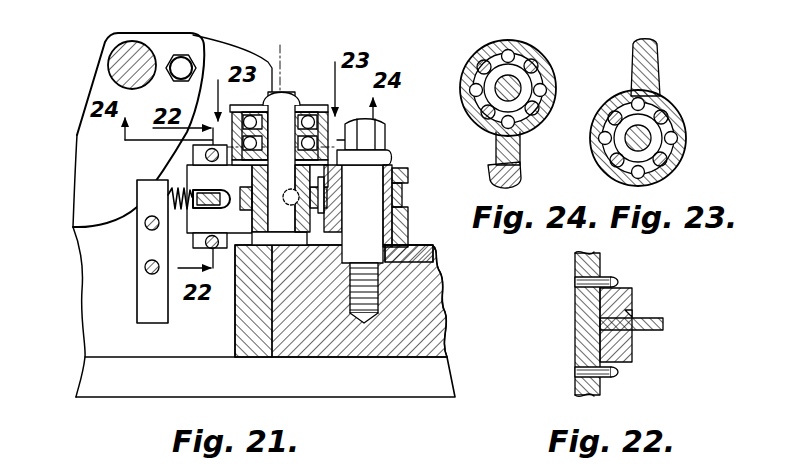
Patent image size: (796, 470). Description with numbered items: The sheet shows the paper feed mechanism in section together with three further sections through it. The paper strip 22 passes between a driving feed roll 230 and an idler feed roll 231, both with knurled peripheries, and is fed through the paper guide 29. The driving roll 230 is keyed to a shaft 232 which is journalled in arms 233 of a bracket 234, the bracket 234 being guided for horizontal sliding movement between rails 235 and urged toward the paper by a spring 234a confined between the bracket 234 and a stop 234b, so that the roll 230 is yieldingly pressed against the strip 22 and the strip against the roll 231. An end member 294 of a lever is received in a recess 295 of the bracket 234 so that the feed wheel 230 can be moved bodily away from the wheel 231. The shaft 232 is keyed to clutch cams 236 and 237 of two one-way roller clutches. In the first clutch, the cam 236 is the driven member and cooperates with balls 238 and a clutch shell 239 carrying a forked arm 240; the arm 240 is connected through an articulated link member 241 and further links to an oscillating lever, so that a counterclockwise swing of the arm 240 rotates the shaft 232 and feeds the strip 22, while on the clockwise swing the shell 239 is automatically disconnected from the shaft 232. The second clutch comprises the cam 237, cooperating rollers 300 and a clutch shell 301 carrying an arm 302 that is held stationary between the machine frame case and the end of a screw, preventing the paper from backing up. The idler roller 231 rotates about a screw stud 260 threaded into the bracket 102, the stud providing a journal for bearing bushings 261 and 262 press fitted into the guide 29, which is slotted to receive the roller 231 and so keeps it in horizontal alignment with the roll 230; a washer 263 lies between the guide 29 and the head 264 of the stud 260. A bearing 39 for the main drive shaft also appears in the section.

In FIG. 21, the strip 22 is at (330, 197).
In FIG. 21, the paper guide 29 is at (405, 240).
In FIG. 22, the bearing 39 is at (580, 329).
In FIG. 21, the bracket 102 is at (428, 316).
In FIG. 21, the driving feed roll 230 is at (239, 207).
In FIG. 21, the idler feed roll 231 is at (402, 198).
In FIG. 21, the shaft 232 is at (280, 113).
In FIG. 24, the shaft 232 is at (520, 86).
In FIG. 23, the shaft 232 is at (627, 106).
In FIG. 21, the arms 233 is at (144, 225).
In FIG. 21, the bracket 234 is at (198, 222).
In FIG. 22, the bracket 234 is at (633, 348).
In FIG. 21, the spring 234a is at (172, 193).
In FIG. 21, the stop 234b is at (150, 207).
In FIG. 21, the rails 235 is at (205, 310).
In FIG. 22, the rails 235 is at (608, 278).
In FIG. 21, the clutch cam 236 is at (297, 150).
In FIG. 24, the clutch cam 236 is at (488, 61).
In FIG. 21, the clutch cam 237 is at (300, 112).
In FIG. 23, the clutch cam 237 is at (668, 121).
In FIG. 24, the balls 238 is at (508, 52).
In FIG. 21, the clutch shell 239 is at (322, 163).
In FIG. 24, the clutch shell 239 is at (542, 68).
In FIG. 24, the forked arm 240 is at (521, 152).
In FIG. 24, the link member 241 is at (490, 168).
In FIG. 21, the screw stud 260 is at (405, 250).
In FIG. 21, the bearing bushing 261 is at (403, 178).
In FIG. 21, the bearing bushing 262 is at (395, 219).
In FIG. 21, the washer 263 is at (388, 164).
In FIG. 21, the head 264 is at (380, 160).
In FIG. 21, the end member 294 is at (205, 195).
In FIG. 22, the end member 294 is at (664, 325).
In FIG. 22, the recess 295 is at (630, 314).
In FIG. 23, the rollers 300 is at (678, 142).
In FIG. 21, the clutch shell 301 is at (245, 106).
In FIG. 23, the clutch shell 301 is at (664, 102).
In FIG. 23, the arm 302 is at (652, 57).